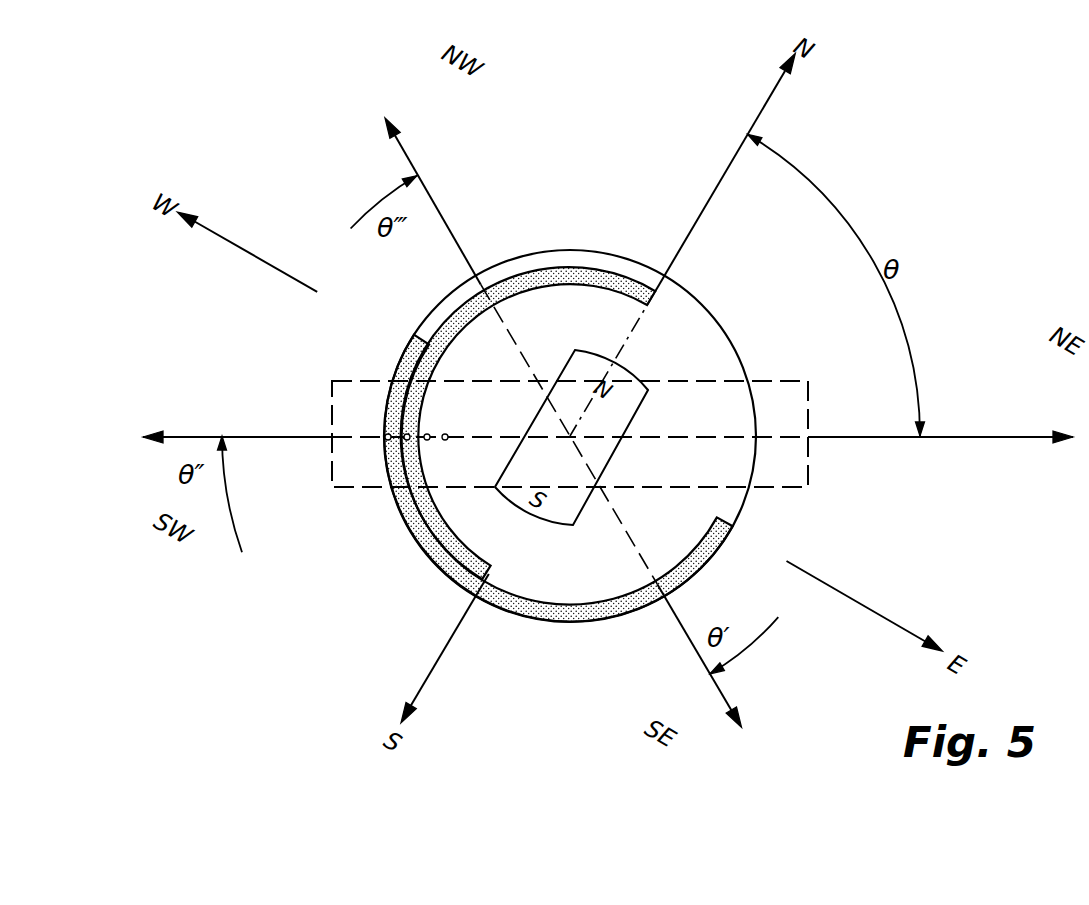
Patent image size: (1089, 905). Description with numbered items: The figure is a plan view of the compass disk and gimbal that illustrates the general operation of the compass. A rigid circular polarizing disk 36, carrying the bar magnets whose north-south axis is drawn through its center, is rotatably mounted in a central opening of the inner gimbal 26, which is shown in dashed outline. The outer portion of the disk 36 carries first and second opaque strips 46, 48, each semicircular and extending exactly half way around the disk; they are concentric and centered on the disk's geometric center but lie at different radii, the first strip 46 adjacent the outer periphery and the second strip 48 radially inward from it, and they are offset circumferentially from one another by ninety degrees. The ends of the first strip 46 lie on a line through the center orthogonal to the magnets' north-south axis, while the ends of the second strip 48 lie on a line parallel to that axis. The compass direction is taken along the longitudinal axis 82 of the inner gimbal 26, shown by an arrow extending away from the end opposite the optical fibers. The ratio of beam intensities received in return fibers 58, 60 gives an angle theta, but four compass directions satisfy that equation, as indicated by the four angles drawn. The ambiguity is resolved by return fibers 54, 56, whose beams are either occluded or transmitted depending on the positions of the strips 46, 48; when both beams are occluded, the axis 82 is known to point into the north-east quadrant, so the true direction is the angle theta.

The inner gimbal 26 is at (337, 392).
The rigid circular disk 36 is at (724, 316).
The first opaque strip 46 is at (407, 345).
The second opaque strip 48 is at (456, 556).
The return fiber 54 is at (388, 441).
The return fiber 56 is at (407, 441).
The return fiber 58 is at (427, 434).
The return fiber 60 is at (447, 434).
The longitudinal axis of the inner gimbal 82 is at (968, 436).